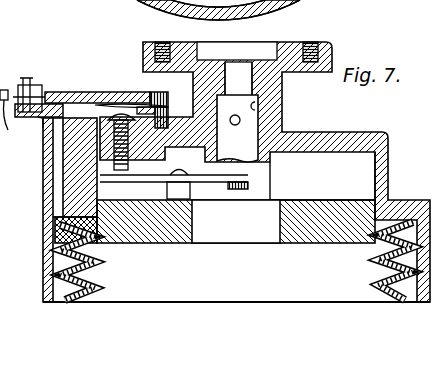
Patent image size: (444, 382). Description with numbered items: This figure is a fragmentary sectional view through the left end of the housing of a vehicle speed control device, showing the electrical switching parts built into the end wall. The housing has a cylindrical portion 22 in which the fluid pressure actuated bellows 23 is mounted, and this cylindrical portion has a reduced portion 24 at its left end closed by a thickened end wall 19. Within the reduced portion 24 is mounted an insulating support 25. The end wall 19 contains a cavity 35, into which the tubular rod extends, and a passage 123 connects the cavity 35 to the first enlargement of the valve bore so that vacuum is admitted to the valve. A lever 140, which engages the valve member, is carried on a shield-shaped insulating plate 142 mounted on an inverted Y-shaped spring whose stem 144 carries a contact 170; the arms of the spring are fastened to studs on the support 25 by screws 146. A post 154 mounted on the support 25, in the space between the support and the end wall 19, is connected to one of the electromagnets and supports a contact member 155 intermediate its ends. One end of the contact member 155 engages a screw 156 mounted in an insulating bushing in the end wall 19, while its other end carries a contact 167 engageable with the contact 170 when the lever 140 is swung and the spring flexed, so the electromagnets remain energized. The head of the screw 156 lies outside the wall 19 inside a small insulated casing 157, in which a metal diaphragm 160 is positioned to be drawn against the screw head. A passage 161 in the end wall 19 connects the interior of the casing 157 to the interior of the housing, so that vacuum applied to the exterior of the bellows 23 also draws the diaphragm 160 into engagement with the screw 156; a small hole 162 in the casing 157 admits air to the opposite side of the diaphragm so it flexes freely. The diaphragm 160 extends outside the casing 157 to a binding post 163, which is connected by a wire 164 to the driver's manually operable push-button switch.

The end wall 19 is at (336, 133).
The cylindrical portion 22 is at (43, 277).
The bellows 23 is at (372, 270).
The reduced portion 24 is at (384, 172).
The support 25 is at (167, 243).
The cavity 35 is at (252, 110).
The passage 123 is at (281, 101).
The lever 140 is at (0, 23).
The insulating plate 142 is at (16, 83).
The stem 144 is at (245, 190).
The screws 146 is at (48, 221).
The post 154 is at (190, 187).
The contact member 155 is at (150, 176).
The screw 156 is at (97, 144).
The insulated casing 157 is at (72, 92).
The metal diaphragm 160 is at (90, 95).
The passage 161 is at (49, 183).
The hole 162 is at (113, 100).
The binding post 163 is at (28, 84).
The wire 164 is at (0, 128).
The contact 167 is at (262, 170).
The contact 170 is at (262, 181).